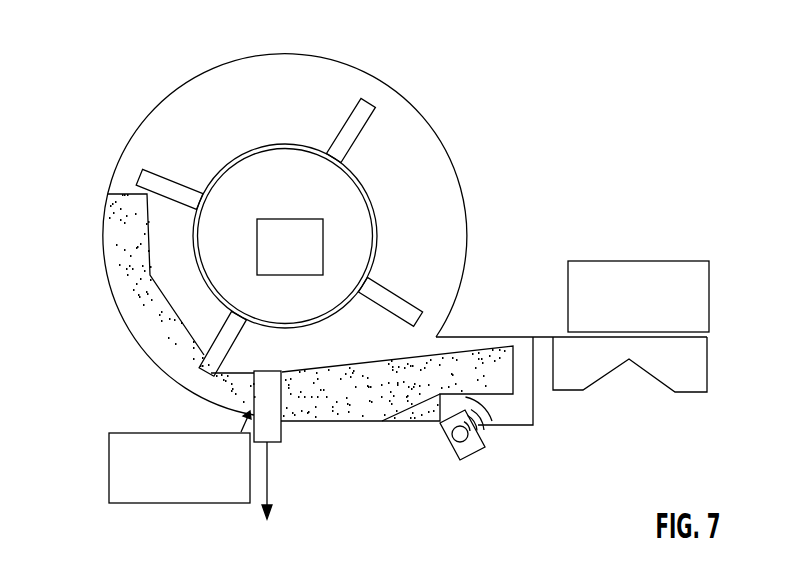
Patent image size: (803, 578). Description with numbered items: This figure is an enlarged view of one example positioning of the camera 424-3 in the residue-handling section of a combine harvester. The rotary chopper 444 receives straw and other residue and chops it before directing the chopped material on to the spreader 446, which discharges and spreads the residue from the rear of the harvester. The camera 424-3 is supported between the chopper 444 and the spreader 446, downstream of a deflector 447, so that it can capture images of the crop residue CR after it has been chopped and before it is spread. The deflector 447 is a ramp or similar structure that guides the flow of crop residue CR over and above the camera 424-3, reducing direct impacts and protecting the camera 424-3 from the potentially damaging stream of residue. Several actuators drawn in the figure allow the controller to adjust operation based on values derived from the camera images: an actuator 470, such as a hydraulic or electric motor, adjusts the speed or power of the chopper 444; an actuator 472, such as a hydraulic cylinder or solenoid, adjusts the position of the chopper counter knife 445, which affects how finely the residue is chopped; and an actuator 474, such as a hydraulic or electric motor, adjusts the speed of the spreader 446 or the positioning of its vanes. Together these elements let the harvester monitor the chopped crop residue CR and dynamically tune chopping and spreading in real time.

The rotary chopper 444 is at (380, 81).
The actuator 470 is at (301, 219).
The crop residue CR is at (470, 362).
The deflector 447 is at (415, 424).
The camera 424-3 is at (472, 455).
The spreader 446 is at (710, 367).
The actuator 474 is at (677, 261).
The actuator 472 is at (109, 472).
The chopper counter knife 445 is at (282, 430).